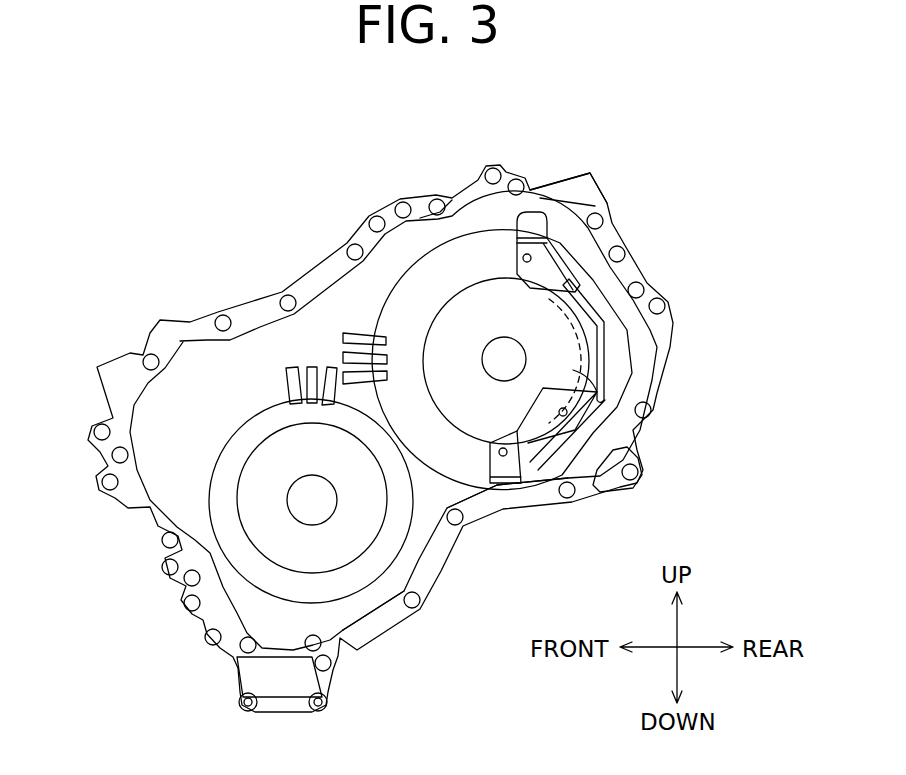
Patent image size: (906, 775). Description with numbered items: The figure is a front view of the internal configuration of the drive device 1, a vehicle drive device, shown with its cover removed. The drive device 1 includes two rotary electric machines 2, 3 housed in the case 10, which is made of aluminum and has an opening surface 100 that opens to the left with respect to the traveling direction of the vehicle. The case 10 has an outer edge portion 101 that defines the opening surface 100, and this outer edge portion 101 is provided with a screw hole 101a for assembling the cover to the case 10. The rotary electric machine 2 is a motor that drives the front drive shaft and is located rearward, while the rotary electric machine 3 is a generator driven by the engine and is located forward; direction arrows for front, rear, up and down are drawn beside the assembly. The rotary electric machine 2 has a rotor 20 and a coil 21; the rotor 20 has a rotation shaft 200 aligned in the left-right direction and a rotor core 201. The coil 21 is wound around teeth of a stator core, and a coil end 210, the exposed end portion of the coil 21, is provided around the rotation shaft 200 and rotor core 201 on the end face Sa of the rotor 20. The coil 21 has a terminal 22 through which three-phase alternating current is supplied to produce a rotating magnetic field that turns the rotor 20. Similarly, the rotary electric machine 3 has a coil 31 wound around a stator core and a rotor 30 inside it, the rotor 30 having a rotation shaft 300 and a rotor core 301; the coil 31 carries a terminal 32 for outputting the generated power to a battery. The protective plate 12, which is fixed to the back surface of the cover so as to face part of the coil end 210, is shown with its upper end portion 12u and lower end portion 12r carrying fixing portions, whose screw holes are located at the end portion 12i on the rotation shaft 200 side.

The drive device 1 is at (409, 403).
The rotary electric machine 2 is at (473, 482).
The rotary electric machine 3 is at (352, 612).
The case 10 is at (356, 403).
The protective plate 12 is at (607, 224).
The end portion 12i is at (555, 355).
The lower end portion 12r is at (473, 457).
The upper end portion 12u is at (565, 222).
The rotor 20 is at (430, 295).
The coil 21 is at (500, 212).
The terminal 22 is at (325, 327).
The rotor 30 is at (226, 499).
The coil 31 is at (218, 436).
The terminal 32 is at (268, 374).
The opening surface 100 is at (476, 489).
The outer edge portion 101 is at (452, 195).
The screw hole 101a is at (440, 187).
The rotation shaft 200 is at (373, 216).
The rotor core 201 is at (438, 328).
The coil end 210 is at (503, 258).
The rotation shaft 300 is at (315, 502).
The rotor core 301 is at (285, 547).
The end face Sa is at (495, 411).